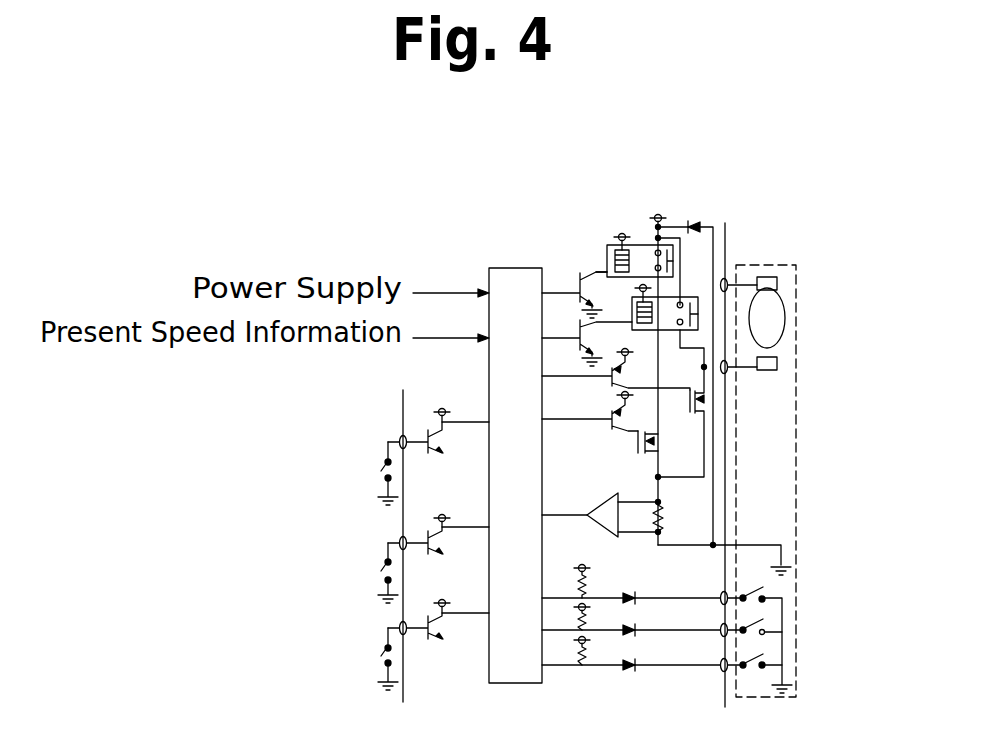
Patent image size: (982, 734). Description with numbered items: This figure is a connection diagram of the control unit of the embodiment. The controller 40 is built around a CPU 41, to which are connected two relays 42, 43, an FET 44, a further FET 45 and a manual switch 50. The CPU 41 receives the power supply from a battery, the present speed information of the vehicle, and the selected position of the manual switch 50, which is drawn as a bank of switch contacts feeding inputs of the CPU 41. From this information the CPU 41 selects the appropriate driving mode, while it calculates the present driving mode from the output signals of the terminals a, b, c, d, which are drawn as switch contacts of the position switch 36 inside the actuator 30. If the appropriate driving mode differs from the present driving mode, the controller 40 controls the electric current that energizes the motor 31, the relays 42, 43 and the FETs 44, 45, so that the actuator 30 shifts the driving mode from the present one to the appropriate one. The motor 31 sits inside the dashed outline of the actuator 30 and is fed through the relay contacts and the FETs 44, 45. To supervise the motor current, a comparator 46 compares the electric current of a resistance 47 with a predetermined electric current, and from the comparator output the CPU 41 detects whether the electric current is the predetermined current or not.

The actuator 30 is at (798, 483).
The motor 31 is at (785, 318).
The position detecting switch 36 is at (808, 623).
The controller 40 is at (618, 222).
The CPU 41 is at (513, 282).
The relay 42 is at (607, 255).
The relay 43 is at (633, 307).
The FET 44 is at (677, 408).
The FET 45 is at (637, 443).
The comparator 46 is at (598, 527).
The resistance 47 is at (657, 515).
The manual switch 50 is at (368, 466).
The terminal a is at (785, 678).
The terminal b is at (764, 597).
The terminal c is at (750, 622).
The terminal d is at (747, 658).